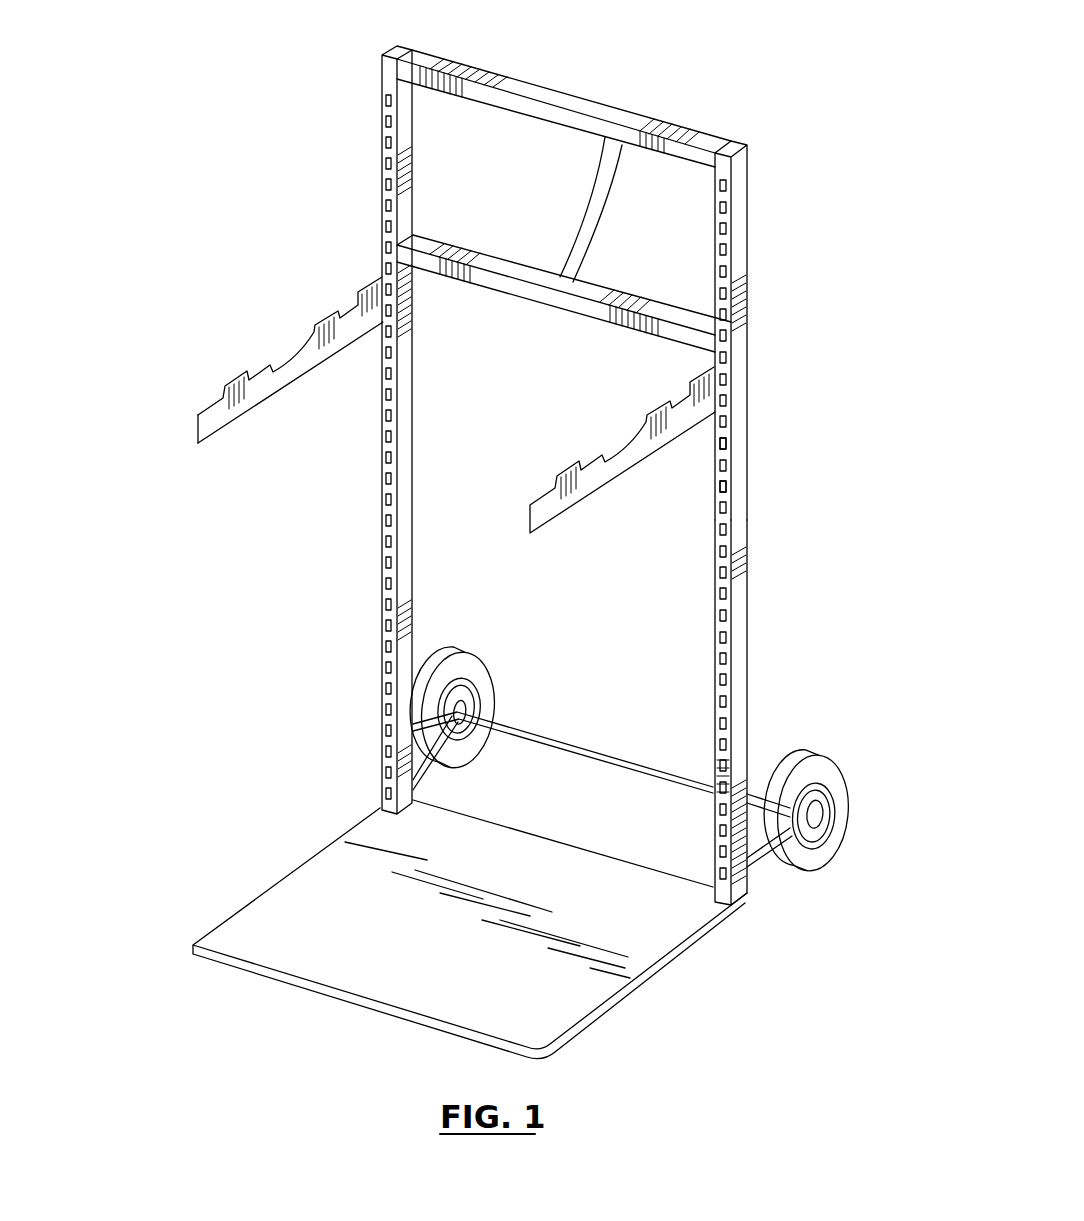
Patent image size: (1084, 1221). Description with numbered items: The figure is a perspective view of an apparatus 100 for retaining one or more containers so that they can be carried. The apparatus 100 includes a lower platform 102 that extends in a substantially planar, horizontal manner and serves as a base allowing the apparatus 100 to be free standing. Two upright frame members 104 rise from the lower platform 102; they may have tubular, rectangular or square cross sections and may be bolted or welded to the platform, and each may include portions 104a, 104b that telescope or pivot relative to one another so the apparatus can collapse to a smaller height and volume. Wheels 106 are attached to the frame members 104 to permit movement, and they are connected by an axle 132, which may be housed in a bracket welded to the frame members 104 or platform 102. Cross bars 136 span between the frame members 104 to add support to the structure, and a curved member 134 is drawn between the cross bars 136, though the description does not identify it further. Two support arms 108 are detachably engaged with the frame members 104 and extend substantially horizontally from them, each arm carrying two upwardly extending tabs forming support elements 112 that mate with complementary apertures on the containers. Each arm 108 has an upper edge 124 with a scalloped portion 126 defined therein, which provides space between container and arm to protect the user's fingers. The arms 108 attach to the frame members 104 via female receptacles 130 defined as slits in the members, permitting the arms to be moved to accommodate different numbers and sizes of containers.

The apparatus 100 is at (282, 92).
The lower platform 102 is at (657, 942).
The frame members 104 is at (404, 601).
The frame member portion 104a is at (740, 353).
The frame member portion 104b is at (732, 627).
The wheels 106 is at (495, 670).
The support arms 108 is at (267, 383).
The support element 112 is at (353, 291).
The upper edge 124 is at (198, 413).
The scalloped portion 126 is at (289, 339).
The female receptacles 130 is at (732, 438).
The axle 132 is at (625, 762).
The curved strut 134 is at (604, 213).
The cross bar 136 is at (652, 127).